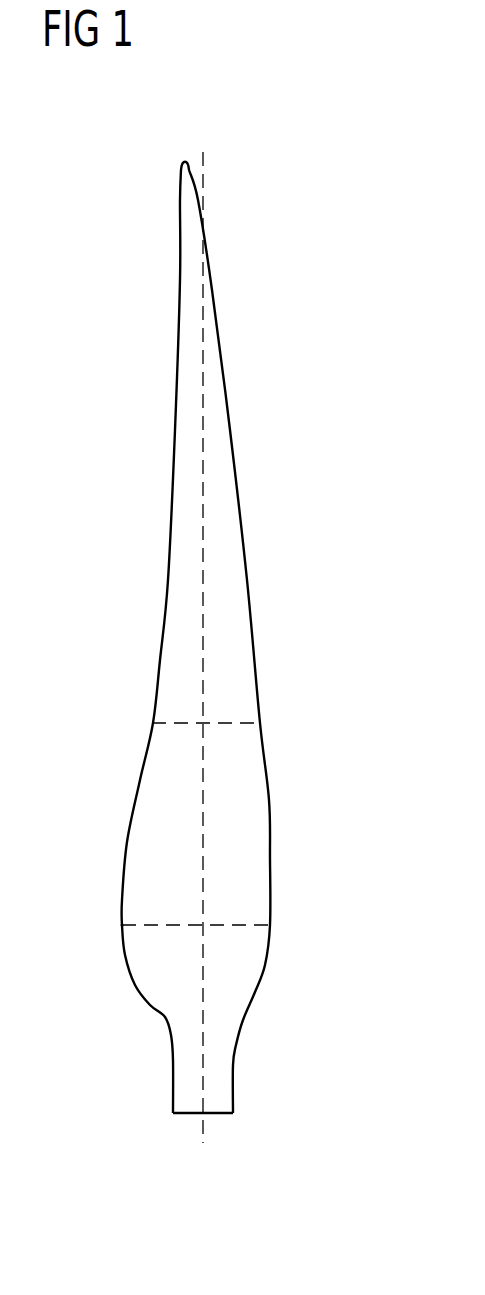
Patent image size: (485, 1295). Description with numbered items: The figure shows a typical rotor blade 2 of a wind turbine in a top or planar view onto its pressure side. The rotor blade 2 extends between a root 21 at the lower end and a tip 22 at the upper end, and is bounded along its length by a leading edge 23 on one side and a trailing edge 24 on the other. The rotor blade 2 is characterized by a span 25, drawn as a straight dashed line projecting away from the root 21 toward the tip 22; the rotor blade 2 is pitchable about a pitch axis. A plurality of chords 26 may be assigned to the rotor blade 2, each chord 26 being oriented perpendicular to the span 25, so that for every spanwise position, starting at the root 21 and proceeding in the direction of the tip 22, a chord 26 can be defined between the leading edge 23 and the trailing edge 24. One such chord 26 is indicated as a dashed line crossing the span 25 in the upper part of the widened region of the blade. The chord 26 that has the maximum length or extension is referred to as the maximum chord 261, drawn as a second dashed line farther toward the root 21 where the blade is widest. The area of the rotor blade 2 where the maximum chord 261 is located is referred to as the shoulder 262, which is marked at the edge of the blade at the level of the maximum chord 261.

The rotor blade 2 is at (206, 640).
The root 21 is at (217, 1115).
The tip 22 is at (186, 163).
The leading edge 23 is at (271, 818).
The trailing edge 24 is at (126, 841).
The span 25 is at (202, 1127).
The chord 26 is at (224, 722).
The maximum chord 261 is at (228, 923).
The shoulder 262 is at (121, 925).